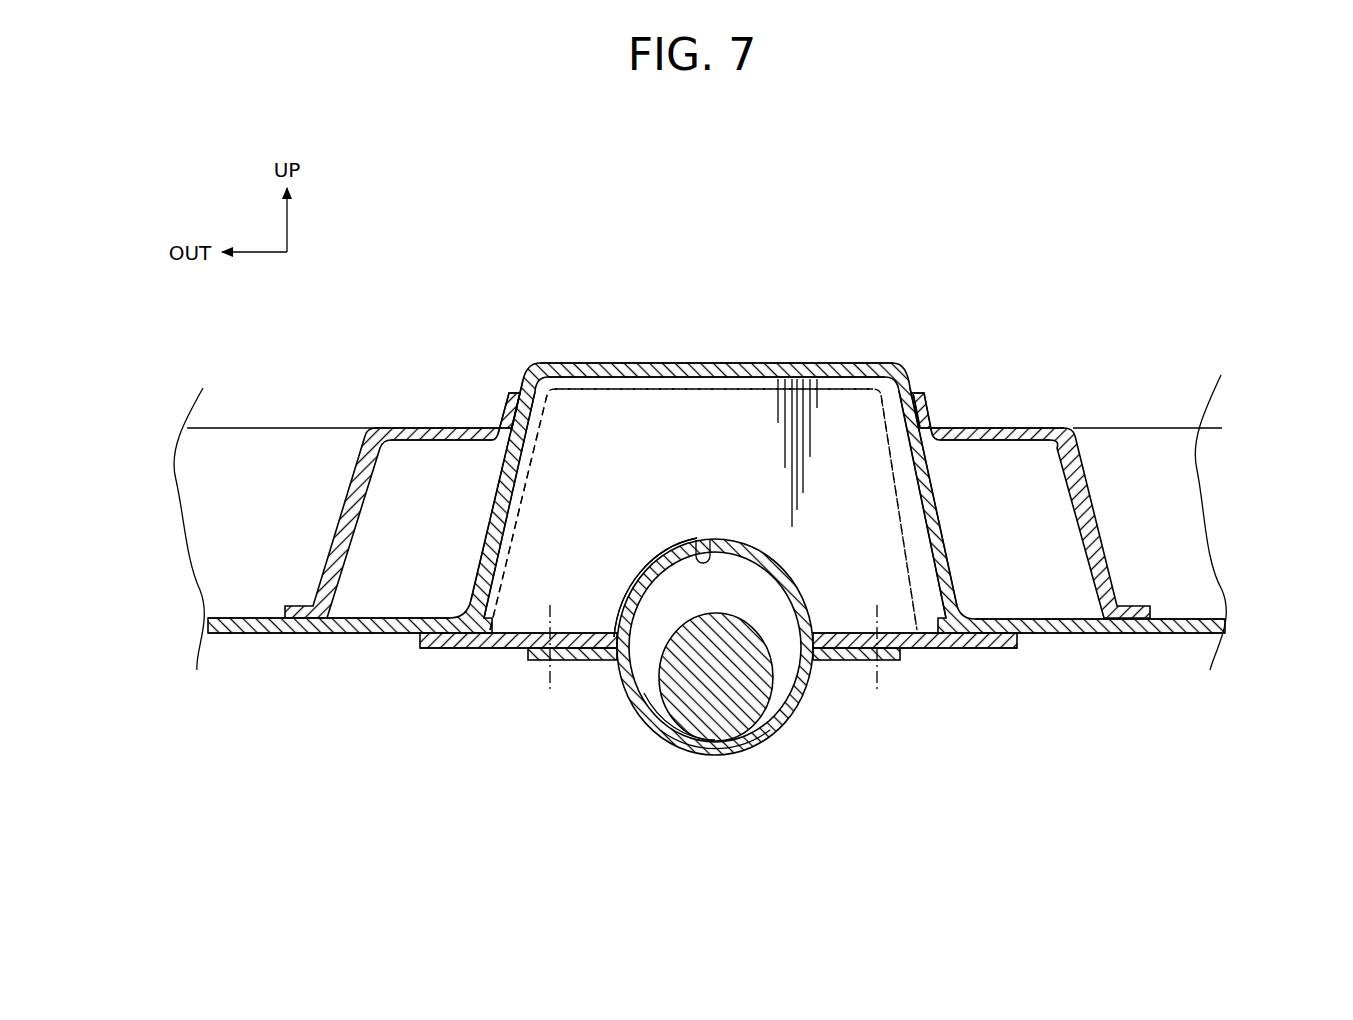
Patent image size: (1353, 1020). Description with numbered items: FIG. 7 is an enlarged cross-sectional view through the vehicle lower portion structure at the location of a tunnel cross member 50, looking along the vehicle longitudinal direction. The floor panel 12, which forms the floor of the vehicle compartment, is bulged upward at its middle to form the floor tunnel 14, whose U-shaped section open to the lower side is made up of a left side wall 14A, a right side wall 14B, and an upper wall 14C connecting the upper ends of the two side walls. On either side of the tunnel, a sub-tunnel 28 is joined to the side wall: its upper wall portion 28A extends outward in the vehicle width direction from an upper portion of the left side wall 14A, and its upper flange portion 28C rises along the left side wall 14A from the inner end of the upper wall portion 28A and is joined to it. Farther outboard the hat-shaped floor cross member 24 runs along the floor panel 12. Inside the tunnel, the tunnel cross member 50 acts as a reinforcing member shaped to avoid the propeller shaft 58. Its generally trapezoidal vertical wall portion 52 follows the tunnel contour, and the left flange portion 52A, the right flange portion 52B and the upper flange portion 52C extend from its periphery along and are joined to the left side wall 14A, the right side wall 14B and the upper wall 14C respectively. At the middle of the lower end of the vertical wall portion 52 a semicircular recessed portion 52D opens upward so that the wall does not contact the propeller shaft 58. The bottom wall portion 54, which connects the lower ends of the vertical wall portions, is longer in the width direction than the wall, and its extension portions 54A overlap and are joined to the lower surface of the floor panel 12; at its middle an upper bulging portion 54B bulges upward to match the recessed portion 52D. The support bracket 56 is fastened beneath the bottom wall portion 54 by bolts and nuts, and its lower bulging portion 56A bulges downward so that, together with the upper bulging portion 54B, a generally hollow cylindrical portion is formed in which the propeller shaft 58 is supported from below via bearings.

The floor panel 12 is at (225, 640).
The floor tunnel 14 is at (751, 360).
The left side wall 14A is at (518, 392).
The right side wall 14B is at (945, 510).
The upper wall 14C is at (634, 362).
The floor cross member 24 is at (228, 426).
The sub-tunnel 28 is at (406, 426).
The upper wall portion 28A is at (453, 426).
The upper flange portion 28C is at (514, 393).
The tunnel cross member 50 is at (529, 673).
The vertical wall portion 52 is at (913, 652).
The left flange portion 52A is at (918, 528).
The right flange portion 52B is at (525, 468).
The upper flange portion 52C is at (683, 392).
The recessed portion 52D is at (705, 556).
The bottom wall portion 54 is at (430, 652).
The extension portion 54A is at (458, 649).
The upper bulging portion 54B is at (646, 570).
The support bracket 56 is at (787, 734).
The lower bulging portion 56A is at (722, 757).
The propeller shaft 58 is at (655, 698).